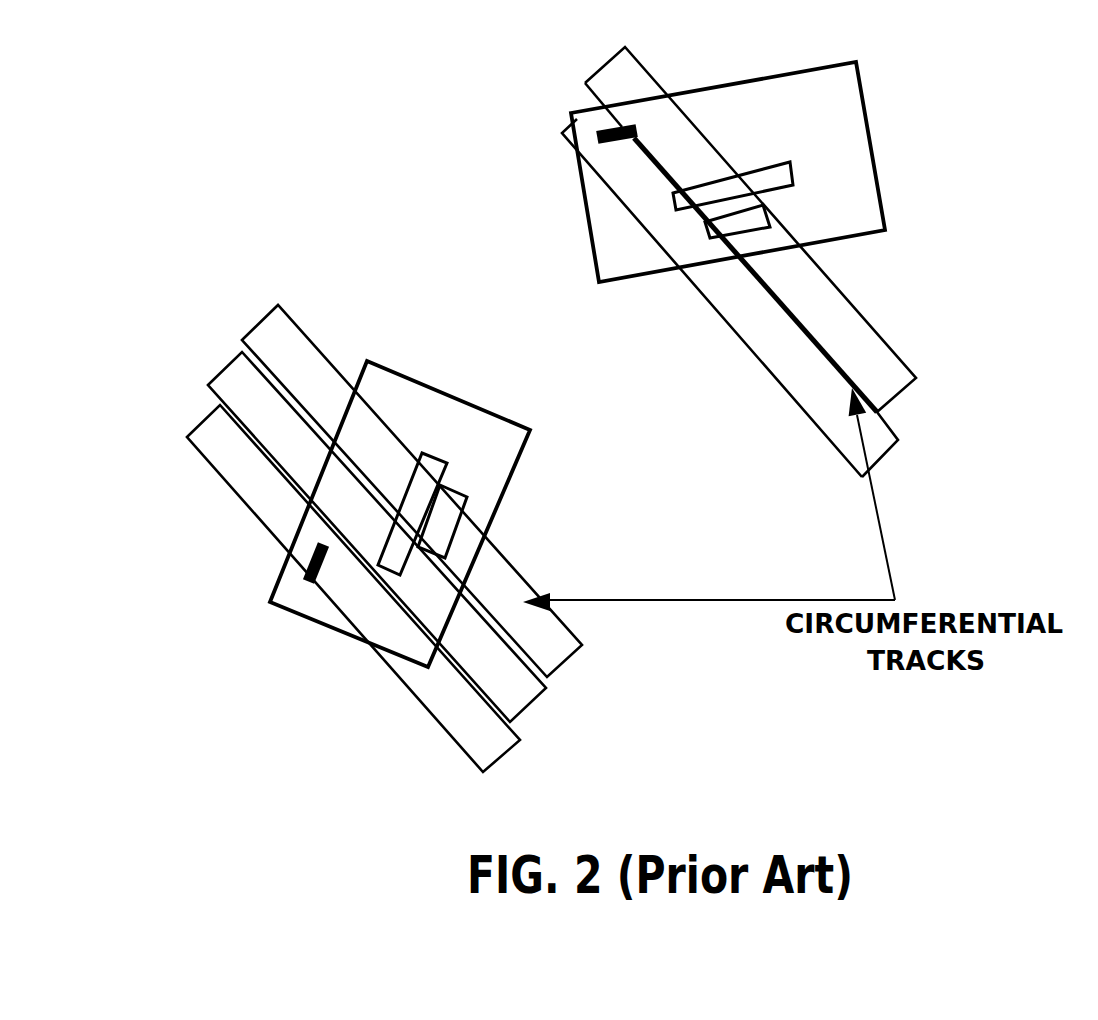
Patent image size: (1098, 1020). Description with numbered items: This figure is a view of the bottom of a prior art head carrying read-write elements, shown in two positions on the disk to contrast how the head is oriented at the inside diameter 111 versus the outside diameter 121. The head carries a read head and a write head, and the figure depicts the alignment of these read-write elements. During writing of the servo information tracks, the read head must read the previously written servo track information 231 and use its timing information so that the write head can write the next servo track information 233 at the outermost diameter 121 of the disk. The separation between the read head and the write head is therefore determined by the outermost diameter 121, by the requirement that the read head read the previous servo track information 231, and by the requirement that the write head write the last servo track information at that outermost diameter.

The outside diameter 121 is at (495, 125).
The inside diameter 111 is at (180, 380).
The previously written servo track information 231 is at (760, 366).
The next servo track information 233 is at (878, 336).